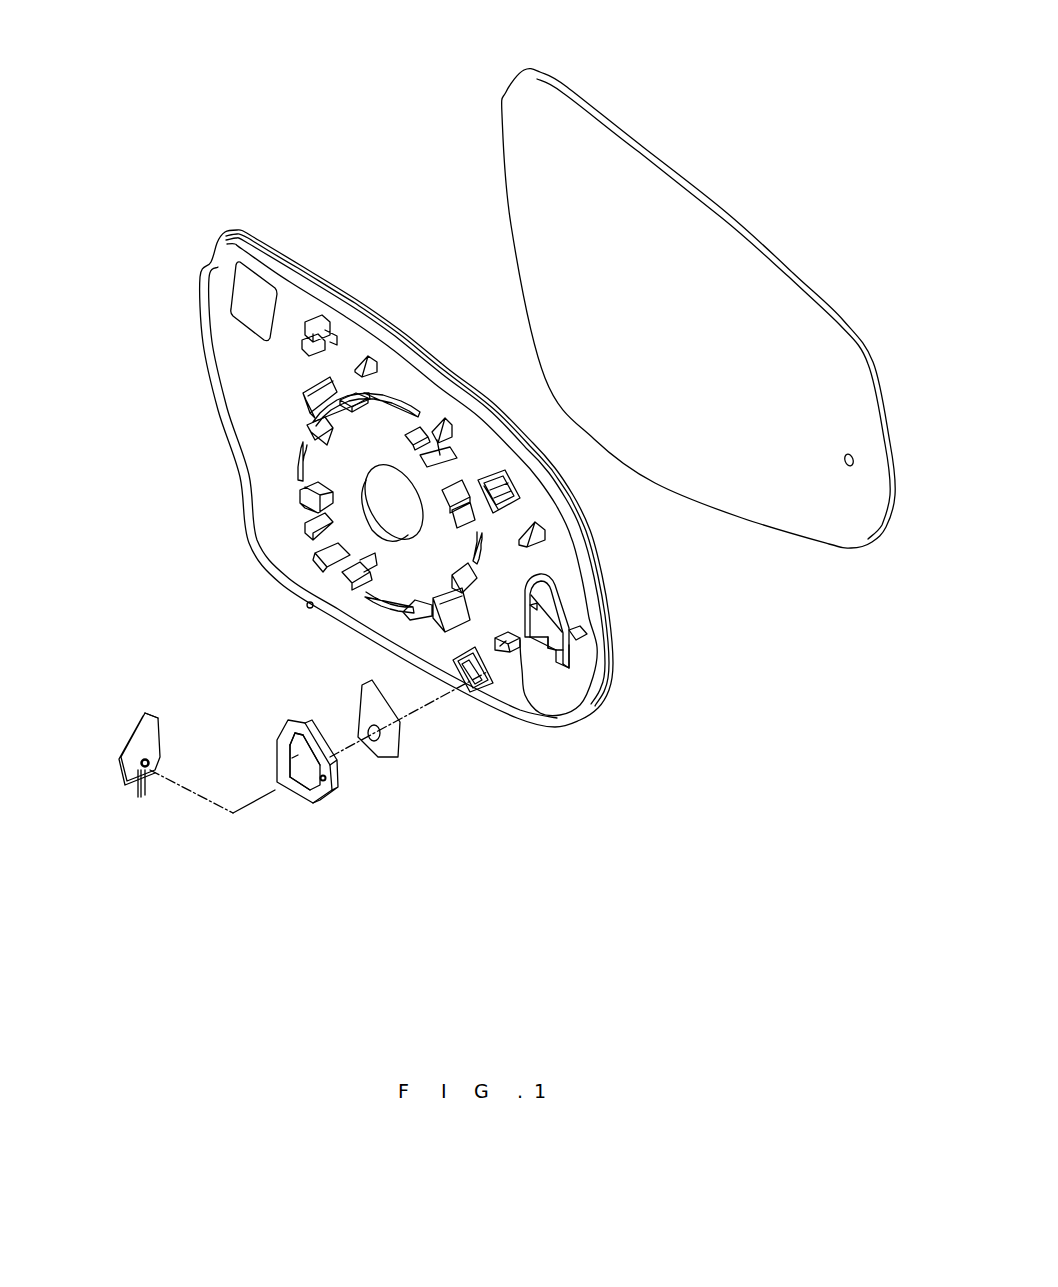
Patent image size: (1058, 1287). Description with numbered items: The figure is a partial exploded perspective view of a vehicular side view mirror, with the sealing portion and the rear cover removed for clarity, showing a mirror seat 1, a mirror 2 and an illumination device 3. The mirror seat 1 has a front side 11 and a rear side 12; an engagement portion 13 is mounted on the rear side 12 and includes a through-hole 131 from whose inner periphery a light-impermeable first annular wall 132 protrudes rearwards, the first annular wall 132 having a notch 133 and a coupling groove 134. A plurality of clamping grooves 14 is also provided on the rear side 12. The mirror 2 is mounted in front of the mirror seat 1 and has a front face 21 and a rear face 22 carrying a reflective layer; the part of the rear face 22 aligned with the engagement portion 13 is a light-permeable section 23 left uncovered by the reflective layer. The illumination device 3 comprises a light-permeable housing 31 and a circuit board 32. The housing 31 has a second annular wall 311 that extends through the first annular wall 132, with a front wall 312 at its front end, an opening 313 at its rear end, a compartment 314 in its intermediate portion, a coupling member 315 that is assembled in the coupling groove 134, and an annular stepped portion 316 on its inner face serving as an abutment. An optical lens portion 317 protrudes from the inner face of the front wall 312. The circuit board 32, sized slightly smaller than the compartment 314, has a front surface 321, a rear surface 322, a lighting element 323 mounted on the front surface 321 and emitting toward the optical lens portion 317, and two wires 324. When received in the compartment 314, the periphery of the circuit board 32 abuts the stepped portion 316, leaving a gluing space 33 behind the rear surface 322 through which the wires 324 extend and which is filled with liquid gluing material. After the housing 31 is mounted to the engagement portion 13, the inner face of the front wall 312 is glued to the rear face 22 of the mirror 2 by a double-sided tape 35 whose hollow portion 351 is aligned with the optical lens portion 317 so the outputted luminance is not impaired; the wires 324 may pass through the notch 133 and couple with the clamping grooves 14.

The mirror seat 1 is at (630, 711).
The front side 11 is at (568, 488).
The rear side 12 is at (252, 480).
The engagement portion 13 is at (571, 687).
The through-hole 131 is at (555, 618).
The first annular wall 132 is at (573, 655).
The notch 133 is at (547, 652).
The coupling groove 134 is at (587, 632).
The clamping grooves 14 is at (510, 652).
The mirror 2 is at (818, 583).
The front face 21 is at (829, 293).
The rear face 22 is at (751, 491).
The light-permeable section 23 is at (855, 452).
The illumination device 3 is at (376, 831).
The housing 31 is at (290, 715).
The second annular wall 311 is at (307, 740).
The front wall 312 is at (322, 750).
The opening 313 is at (287, 730).
The compartment 314 is at (297, 760).
The coupling member 315 is at (327, 797).
The annular stepped portion 316 is at (297, 762).
The optical lens portion 317 is at (297, 800).
The circuit board 32 is at (117, 778).
The front surface 321 is at (148, 735).
The rear surface 322 is at (138, 718).
The lighting element 323 is at (148, 767).
The wires 324 is at (140, 797).
The gluing space 33 is at (263, 790).
The double-sided tape 35 is at (397, 747).
The hollow portion 351 is at (382, 737).